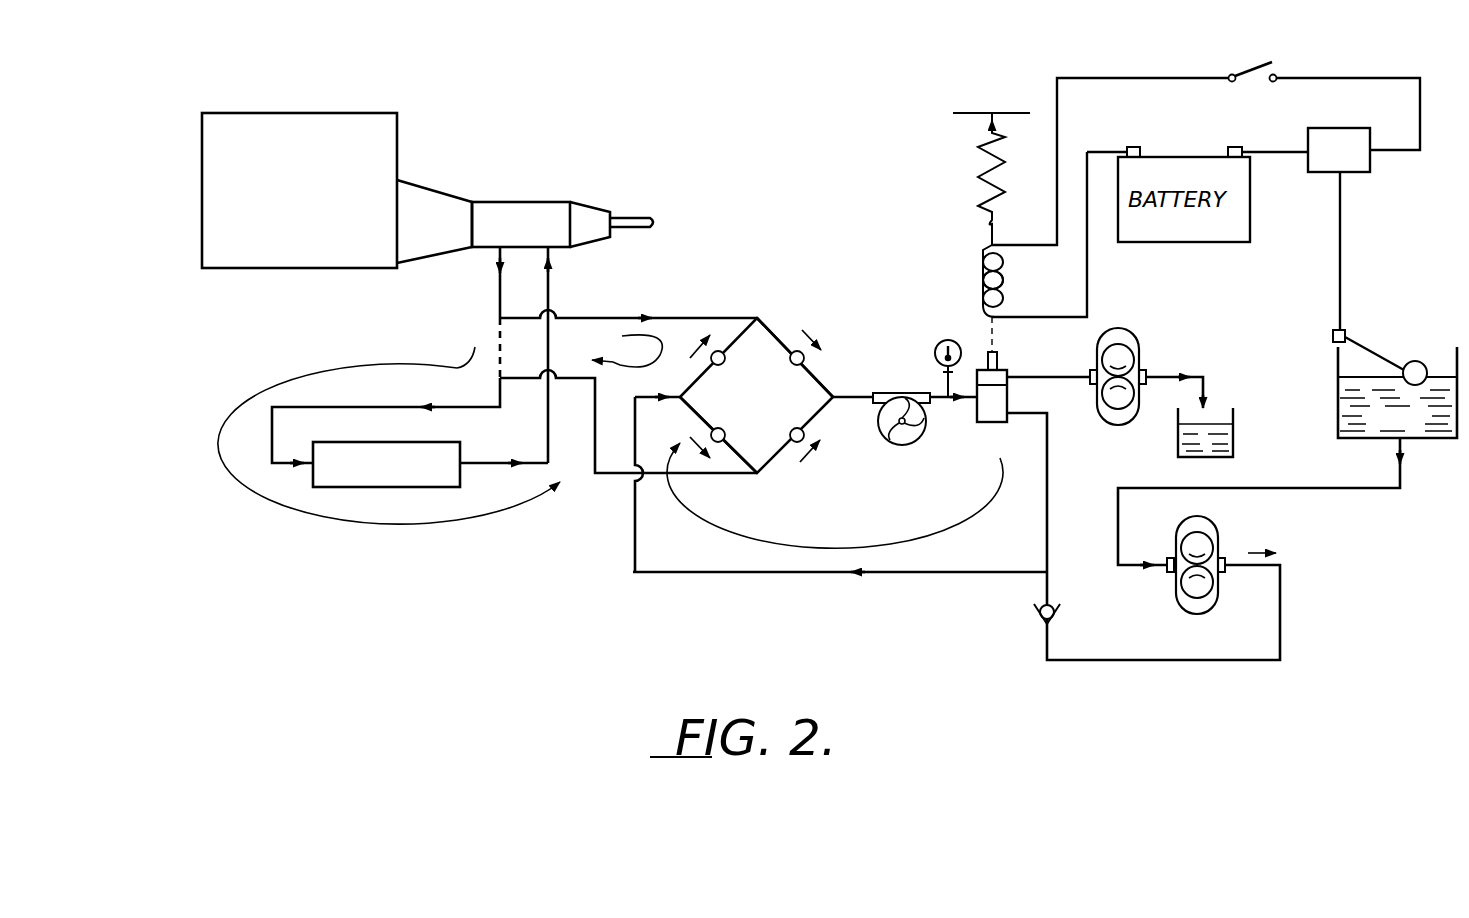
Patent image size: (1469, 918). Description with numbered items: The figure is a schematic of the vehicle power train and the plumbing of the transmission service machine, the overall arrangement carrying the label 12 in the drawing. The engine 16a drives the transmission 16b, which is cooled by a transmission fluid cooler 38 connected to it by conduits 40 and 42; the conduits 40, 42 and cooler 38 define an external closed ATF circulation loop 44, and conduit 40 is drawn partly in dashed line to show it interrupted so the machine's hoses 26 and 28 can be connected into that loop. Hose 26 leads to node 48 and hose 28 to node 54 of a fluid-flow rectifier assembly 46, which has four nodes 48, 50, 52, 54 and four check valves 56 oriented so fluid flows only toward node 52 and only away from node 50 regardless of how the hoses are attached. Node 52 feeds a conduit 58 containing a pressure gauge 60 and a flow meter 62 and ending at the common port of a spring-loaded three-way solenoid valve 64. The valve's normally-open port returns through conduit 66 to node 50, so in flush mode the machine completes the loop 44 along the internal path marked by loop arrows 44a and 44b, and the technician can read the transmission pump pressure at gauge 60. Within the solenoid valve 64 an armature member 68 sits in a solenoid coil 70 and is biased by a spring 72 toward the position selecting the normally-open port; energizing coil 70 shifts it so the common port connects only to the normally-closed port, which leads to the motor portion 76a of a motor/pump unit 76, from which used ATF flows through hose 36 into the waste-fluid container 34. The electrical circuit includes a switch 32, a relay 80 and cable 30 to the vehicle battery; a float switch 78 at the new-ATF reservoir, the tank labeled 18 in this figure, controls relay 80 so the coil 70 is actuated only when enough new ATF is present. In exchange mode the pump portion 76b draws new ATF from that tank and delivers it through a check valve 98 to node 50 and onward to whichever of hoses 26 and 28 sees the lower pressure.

The transmission fluid exchange apparatus 12 is at (876, 110).
The engine 16a is at (349, 113).
The transmission 16b is at (538, 202).
The new fluid reservoir 18 is at (1423, 440).
The hose 26 is at (605, 318).
The hose 28 is at (595, 437).
The cable 30 is at (1145, 78).
The switch 32 is at (1248, 62).
The waste-fluid container 34 is at (1233, 437).
The hose 36 is at (1204, 372).
The transmission fluid cooler 38 is at (386, 487).
The conduit 40 is at (498, 290).
The conduit 42 is at (550, 280).
The external closed ATF circulation loop 44 is at (342, 370).
The loop arrow 44a is at (622, 366).
The loop arrow 44b is at (957, 525).
The fluid-flow rectifier assembly 46 is at (775, 314).
The node 48 is at (755, 316).
The node 50 is at (680, 400).
The node 52 is at (835, 390).
The node 54 is at (760, 475).
The check valve 56 is at (800, 365).
The conduit 58 is at (937, 403).
The pressure gauge 60 is at (935, 343).
The flow meter 62 is at (898, 446).
The spring-loaded three-way solenoid valve 64 is at (1020, 394).
The conduit 66 is at (1048, 492).
The armature member 68 is at (998, 355).
The solenoid coil 70 is at (1016, 277).
The spring 72 is at (983, 173).
The motor/pump unit 76 is at (1118, 450).
The motor portion 76a is at (1137, 345).
The pump portion 76b is at (1217, 536).
The float switch 78 is at (1347, 330).
The relay 80 is at (1372, 168).
The check valve 98 is at (1057, 617).